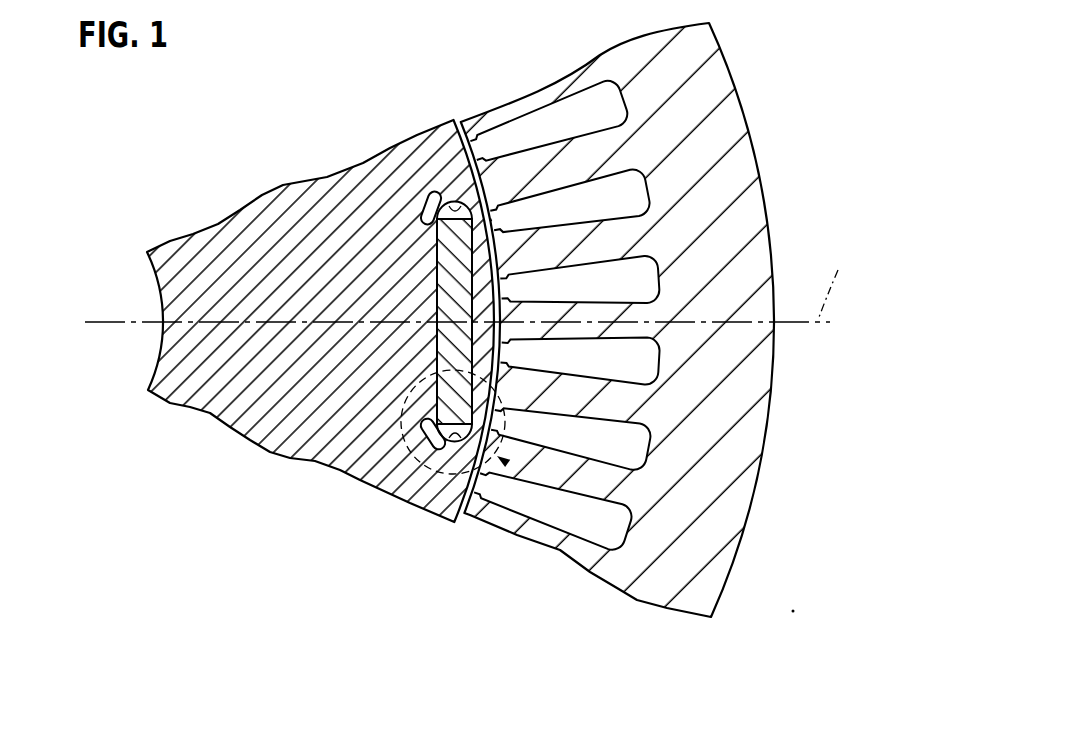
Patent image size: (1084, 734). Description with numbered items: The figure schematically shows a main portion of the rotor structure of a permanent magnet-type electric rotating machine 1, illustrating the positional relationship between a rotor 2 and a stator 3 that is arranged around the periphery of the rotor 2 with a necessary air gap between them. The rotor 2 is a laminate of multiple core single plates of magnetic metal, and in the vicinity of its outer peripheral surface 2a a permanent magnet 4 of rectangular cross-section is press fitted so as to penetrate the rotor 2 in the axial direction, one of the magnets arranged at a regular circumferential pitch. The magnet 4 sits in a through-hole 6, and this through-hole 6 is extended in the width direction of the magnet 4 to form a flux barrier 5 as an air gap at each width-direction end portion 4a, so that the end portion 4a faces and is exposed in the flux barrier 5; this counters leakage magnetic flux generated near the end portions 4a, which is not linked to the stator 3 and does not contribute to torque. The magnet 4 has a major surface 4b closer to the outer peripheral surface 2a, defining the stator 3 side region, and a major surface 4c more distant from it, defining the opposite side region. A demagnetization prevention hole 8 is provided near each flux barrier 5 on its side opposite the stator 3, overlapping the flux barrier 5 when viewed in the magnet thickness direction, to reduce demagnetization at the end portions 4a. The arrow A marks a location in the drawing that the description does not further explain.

The permanent magnet-type electric rotating machine 1 is at (767, 167).
The rotor 2 is at (283, 222).
The outer peripheral surface 2a is at (470, 484).
The stator 3 is at (772, 402).
The permanent magnet 4 is at (437, 267).
The width-direction end portion 4a is at (474, 219).
The major surface 4b is at (474, 291).
The major surface 4c is at (437, 302).
The flux barrier 5 is at (457, 203).
The through-hole 6 is at (436, 386).
The demagnetization prevention hole 8 is at (432, 193).
The arrow A is at (500, 458).